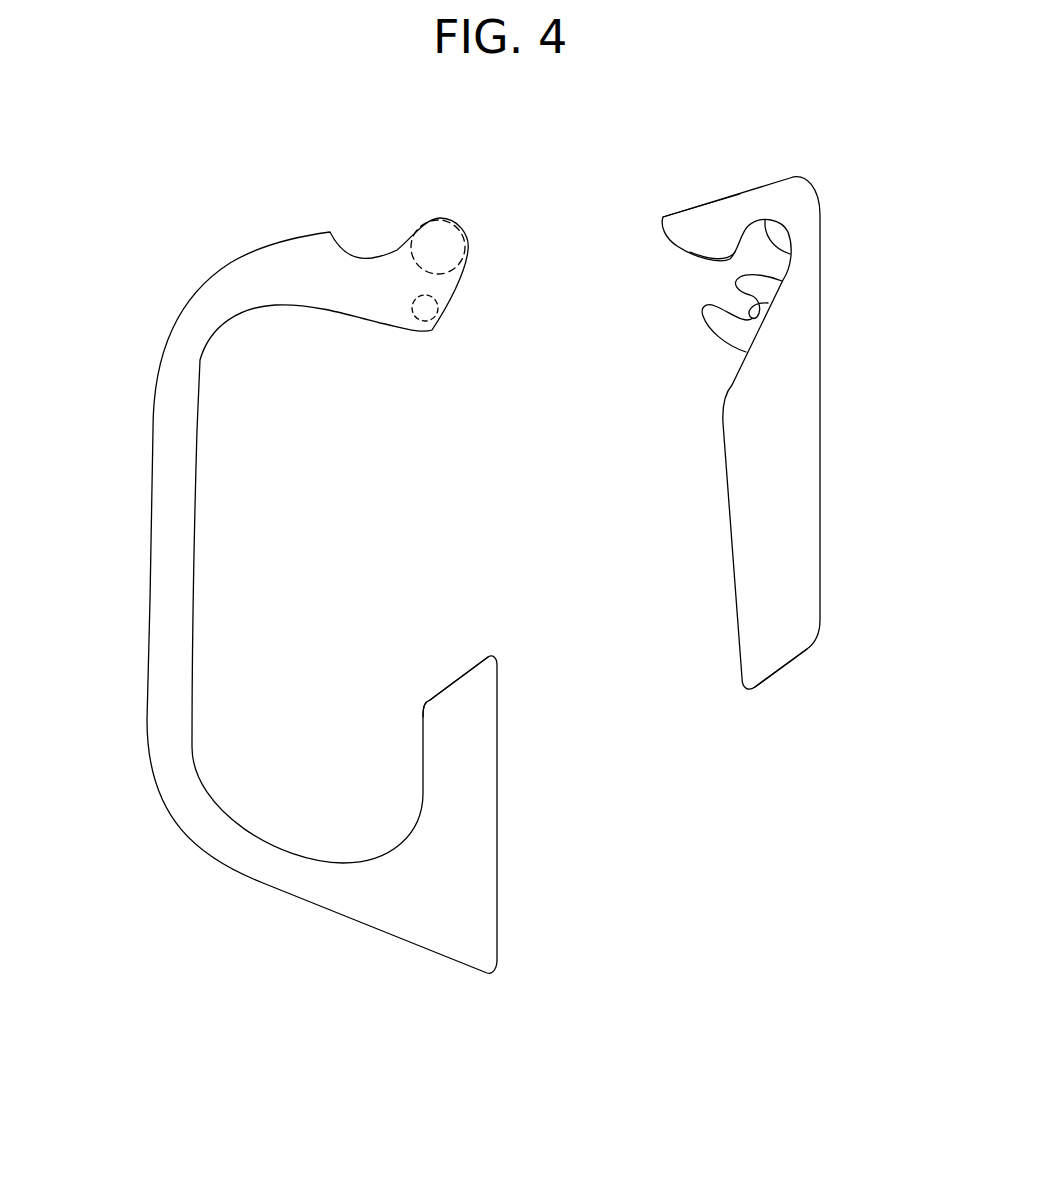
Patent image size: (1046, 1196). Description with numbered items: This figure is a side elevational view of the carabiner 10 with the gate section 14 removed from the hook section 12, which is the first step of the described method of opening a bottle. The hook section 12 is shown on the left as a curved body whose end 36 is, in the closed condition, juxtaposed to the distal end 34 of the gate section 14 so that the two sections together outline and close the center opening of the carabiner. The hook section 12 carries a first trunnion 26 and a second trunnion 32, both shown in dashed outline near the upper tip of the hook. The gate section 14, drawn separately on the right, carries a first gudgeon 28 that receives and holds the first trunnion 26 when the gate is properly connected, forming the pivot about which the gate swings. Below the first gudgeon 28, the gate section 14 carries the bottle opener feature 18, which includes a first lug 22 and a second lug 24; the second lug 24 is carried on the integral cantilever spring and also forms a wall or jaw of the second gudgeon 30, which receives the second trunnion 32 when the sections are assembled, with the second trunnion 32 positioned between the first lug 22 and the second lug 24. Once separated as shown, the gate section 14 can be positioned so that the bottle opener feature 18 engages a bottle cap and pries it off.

The carabiner 10 is at (206, 213).
The hook section 12 is at (168, 575).
The gate section 14 is at (818, 438).
The bottle opener feature 18 is at (688, 278).
The first lug 22 is at (688, 227).
The second lug 24 is at (717, 320).
The first trunnion 26 is at (450, 232).
The first gudgeon 28 is at (775, 240).
The second gudgeon 30 is at (753, 303).
The second trunnion 32 is at (427, 313).
The distal end of the gate section 34 is at (778, 670).
The end of the hook section 36 is at (450, 683).